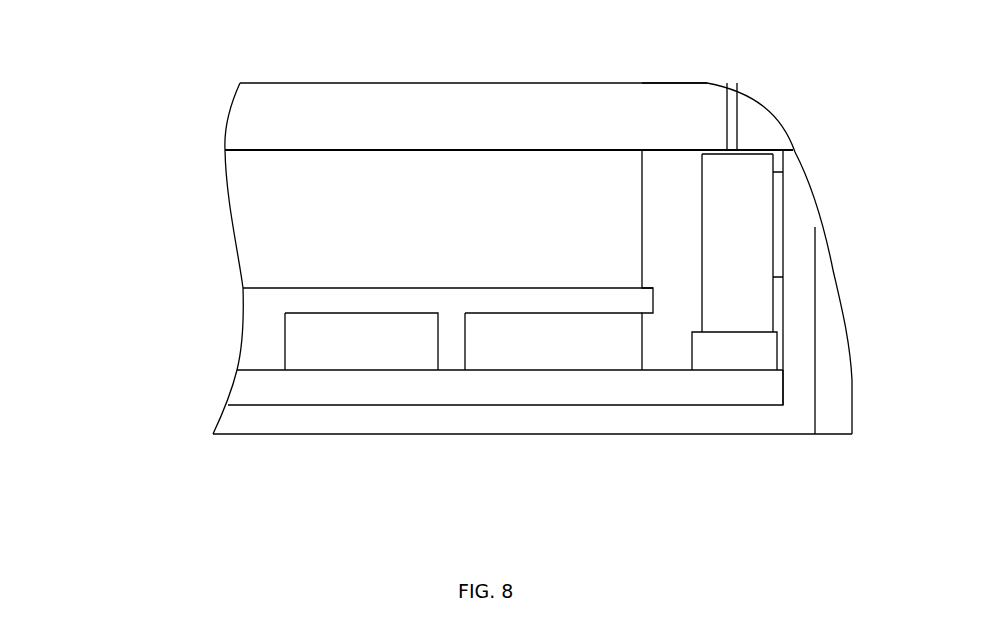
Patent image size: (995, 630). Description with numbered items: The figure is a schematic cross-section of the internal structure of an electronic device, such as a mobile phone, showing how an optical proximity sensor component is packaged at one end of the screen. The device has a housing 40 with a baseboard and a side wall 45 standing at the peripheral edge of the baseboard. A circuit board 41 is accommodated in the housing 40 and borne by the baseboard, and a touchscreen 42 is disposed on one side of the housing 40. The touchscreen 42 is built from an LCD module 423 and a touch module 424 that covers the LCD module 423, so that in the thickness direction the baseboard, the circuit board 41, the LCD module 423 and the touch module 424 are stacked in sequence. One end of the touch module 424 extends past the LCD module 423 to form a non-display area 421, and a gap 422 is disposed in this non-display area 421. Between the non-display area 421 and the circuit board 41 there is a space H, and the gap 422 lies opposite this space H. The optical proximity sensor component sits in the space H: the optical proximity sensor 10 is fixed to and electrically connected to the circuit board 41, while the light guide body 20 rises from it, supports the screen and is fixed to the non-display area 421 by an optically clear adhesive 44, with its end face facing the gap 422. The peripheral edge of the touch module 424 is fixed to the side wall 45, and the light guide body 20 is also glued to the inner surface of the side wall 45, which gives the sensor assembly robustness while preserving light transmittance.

The housing 40 is at (837, 278).
The touchscreen 42 is at (419, 242).
The touch module 424 is at (265, 113).
The LCD module 423 is at (282, 214).
The non-display area 421 is at (777, 77).
The gap 422 is at (738, 113).
The optically clear adhesive 44 is at (793, 150).
The light guide body 20 is at (745, 252).
The side wall 45 is at (800, 322).
The optical proximity sensor 10 is at (757, 350).
The circuit board 41 is at (596, 391).
The space H is at (665, 215).